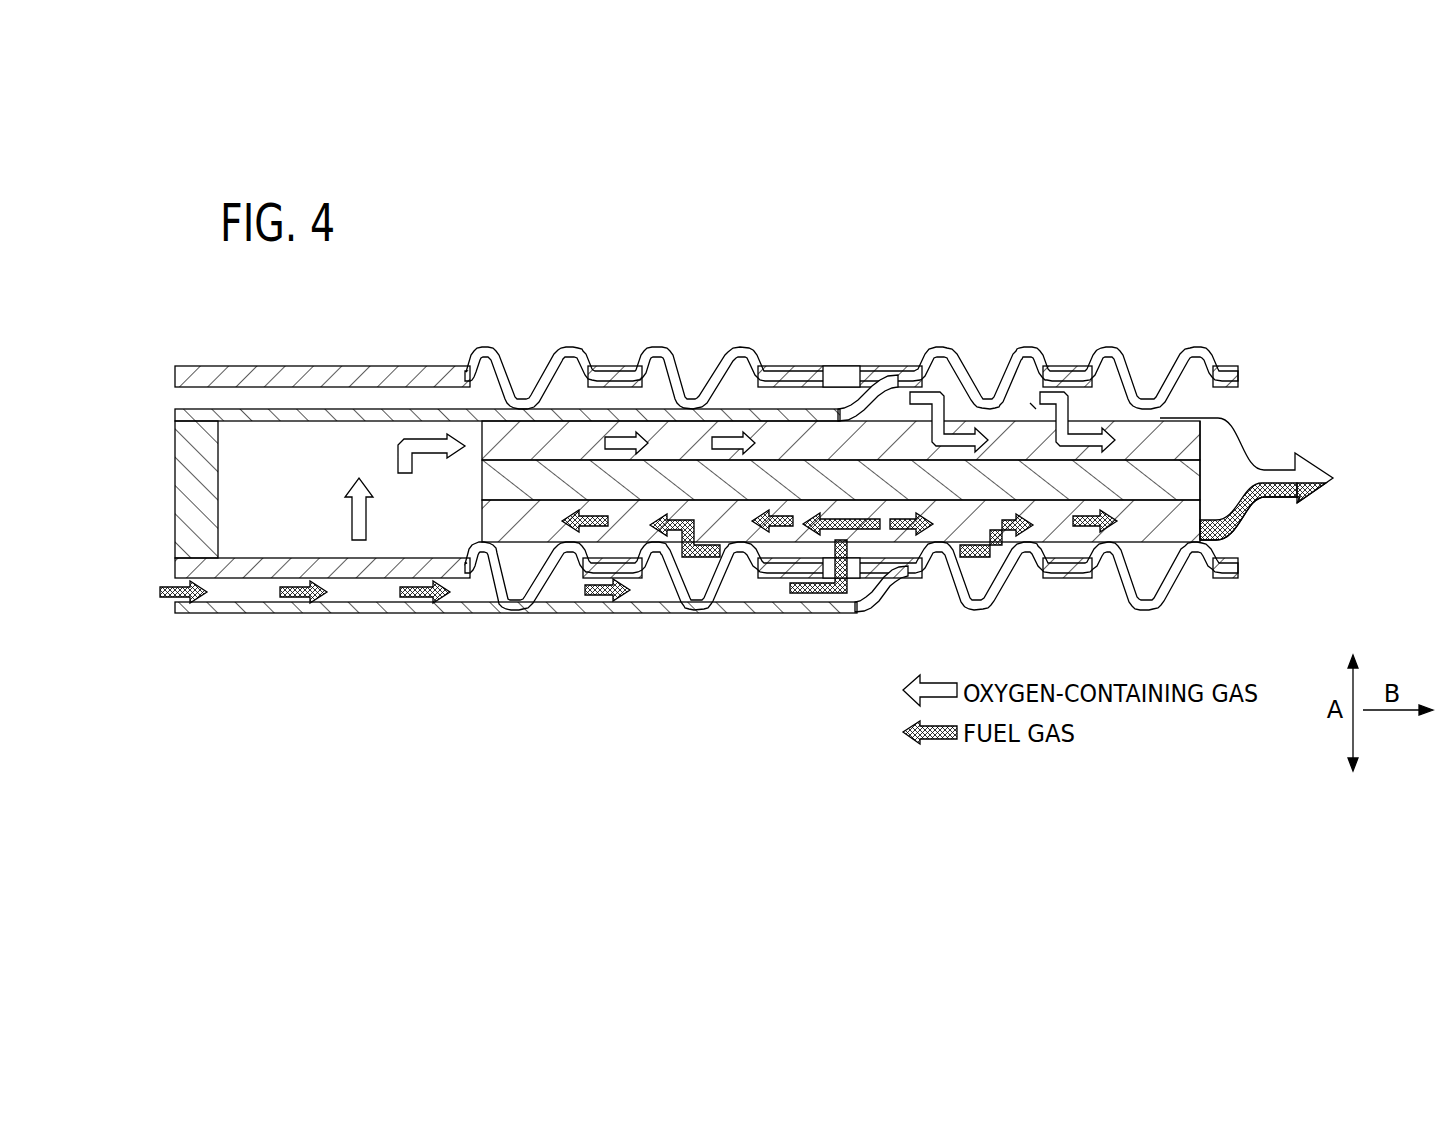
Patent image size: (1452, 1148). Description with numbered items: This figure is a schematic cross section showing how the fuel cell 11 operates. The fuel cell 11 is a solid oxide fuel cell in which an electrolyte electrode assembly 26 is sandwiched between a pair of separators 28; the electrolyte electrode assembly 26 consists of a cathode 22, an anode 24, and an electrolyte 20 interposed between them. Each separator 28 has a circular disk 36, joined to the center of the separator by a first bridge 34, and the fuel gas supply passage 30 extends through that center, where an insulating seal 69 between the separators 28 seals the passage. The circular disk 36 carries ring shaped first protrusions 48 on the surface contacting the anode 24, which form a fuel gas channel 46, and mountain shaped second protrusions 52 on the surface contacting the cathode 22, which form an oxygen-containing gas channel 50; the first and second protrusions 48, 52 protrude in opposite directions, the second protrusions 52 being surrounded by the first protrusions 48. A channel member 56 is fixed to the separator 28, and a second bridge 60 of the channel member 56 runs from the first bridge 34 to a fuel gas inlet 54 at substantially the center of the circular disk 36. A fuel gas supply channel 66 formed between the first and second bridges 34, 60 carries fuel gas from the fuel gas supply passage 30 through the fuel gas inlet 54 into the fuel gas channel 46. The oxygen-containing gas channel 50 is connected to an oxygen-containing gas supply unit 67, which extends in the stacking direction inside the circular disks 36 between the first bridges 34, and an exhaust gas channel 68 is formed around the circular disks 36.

The fuel cell 11 is at (463, 278).
The electrolyte 20 is at (1067, 484).
The cathode 22 is at (1082, 452).
The anode 24 is at (1048, 520).
The electrolyte electrode assembly 26 is at (1125, 624).
The separator 28 is at (1246, 345).
The fuel gas supply passage 30 is at (158, 535).
The first bridge 34 is at (256, 366).
The circular disk 36 is at (1071, 358).
The fuel gas channel 46 is at (884, 549).
The first protrusion 48 is at (650, 347).
The oxygen-containing gas channel 50 is at (956, 408).
The second protrusion 52 is at (1036, 404).
The fuel gas inlet 54 is at (867, 606).
The channel member 56 is at (300, 423).
The second bridge 60 is at (263, 421).
The fuel gas supply channel 66 is at (318, 407).
The oxygen-containing gas supply unit 67 is at (272, 528).
The exhaust gas channel 68 is at (1259, 468).
The insulating seal 69 is at (197, 488).